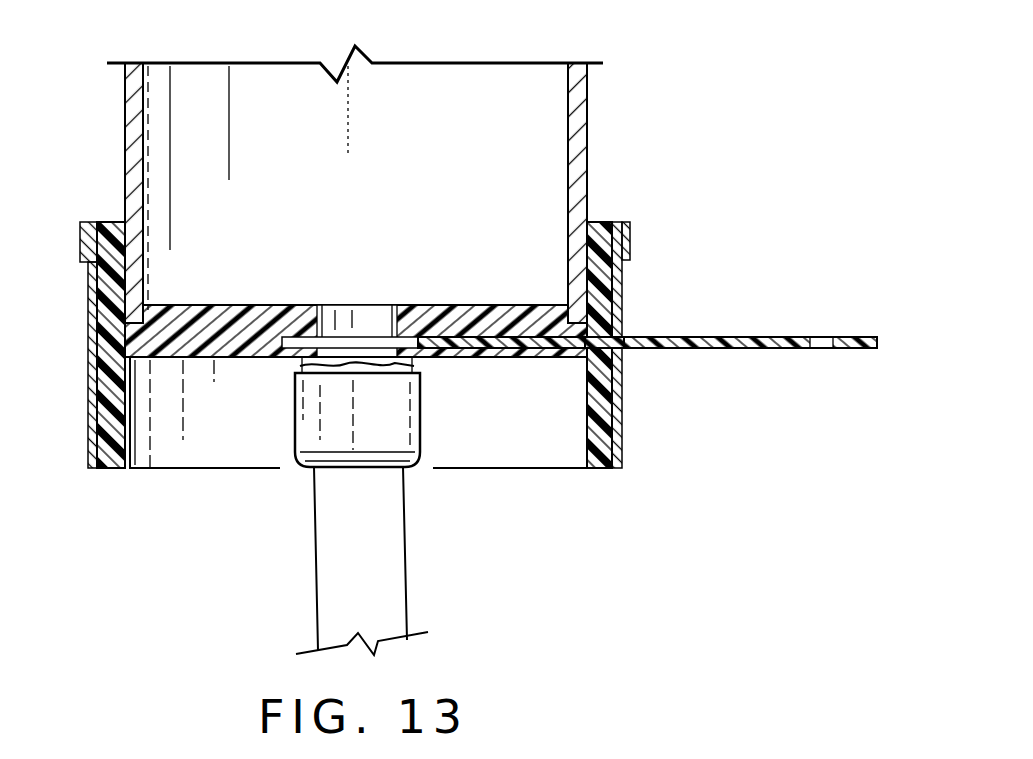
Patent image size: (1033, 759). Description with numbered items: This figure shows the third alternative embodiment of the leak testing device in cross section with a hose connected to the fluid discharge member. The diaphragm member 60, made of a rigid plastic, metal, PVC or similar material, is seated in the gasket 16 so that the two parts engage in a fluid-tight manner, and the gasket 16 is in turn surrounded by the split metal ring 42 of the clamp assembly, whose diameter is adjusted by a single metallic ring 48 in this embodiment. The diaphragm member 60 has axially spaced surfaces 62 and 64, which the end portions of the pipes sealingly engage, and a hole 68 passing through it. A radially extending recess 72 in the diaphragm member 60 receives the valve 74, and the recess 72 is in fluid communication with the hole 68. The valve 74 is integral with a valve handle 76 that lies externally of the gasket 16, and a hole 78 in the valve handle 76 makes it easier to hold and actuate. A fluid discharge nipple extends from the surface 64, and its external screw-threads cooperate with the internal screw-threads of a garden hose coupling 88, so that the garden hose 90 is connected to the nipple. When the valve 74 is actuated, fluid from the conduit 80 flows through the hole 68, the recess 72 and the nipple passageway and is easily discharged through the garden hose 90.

The gasket 16 is at (603, 215).
The metal ring 42 is at (625, 300).
The upper metallic ring 48 is at (630, 240).
The diaphragm member 60 is at (194, 303).
The surface 62 is at (257, 305).
The surface 64 is at (238, 358).
The hole 68 is at (381, 305).
The recess 72 is at (316, 305).
The valve 74 is at (480, 336).
The valve handle 76 is at (752, 335).
The hole 78 is at (823, 350).
The conduit 80 is at (587, 147).
The garden hose coupling 88 is at (423, 418).
The garden hose 90 is at (407, 578).